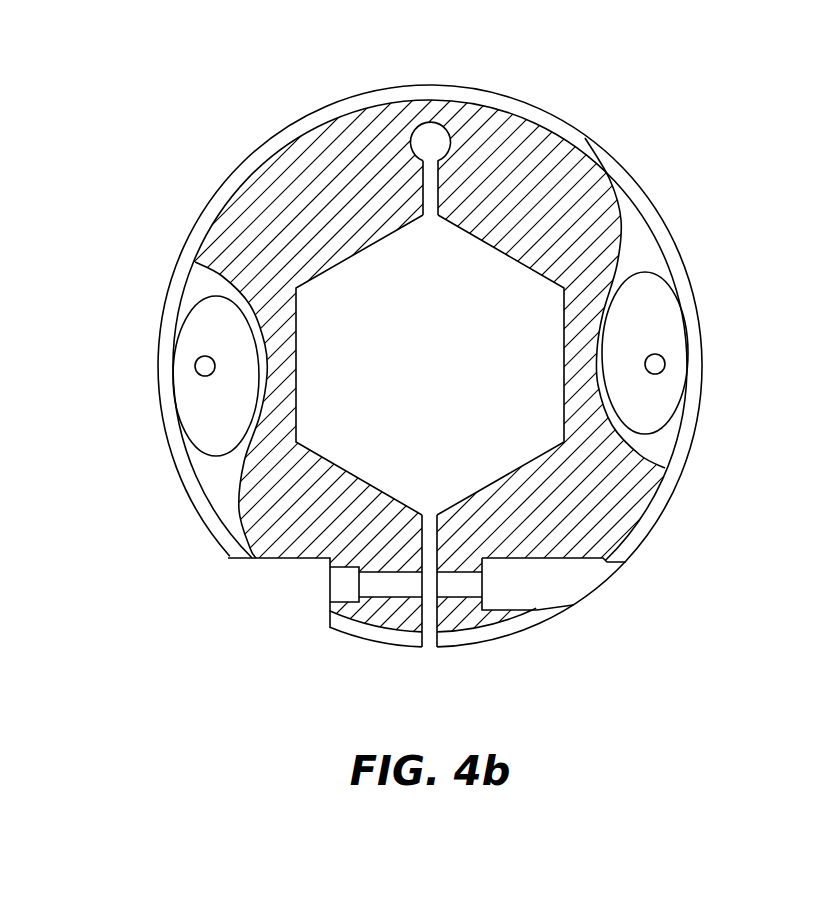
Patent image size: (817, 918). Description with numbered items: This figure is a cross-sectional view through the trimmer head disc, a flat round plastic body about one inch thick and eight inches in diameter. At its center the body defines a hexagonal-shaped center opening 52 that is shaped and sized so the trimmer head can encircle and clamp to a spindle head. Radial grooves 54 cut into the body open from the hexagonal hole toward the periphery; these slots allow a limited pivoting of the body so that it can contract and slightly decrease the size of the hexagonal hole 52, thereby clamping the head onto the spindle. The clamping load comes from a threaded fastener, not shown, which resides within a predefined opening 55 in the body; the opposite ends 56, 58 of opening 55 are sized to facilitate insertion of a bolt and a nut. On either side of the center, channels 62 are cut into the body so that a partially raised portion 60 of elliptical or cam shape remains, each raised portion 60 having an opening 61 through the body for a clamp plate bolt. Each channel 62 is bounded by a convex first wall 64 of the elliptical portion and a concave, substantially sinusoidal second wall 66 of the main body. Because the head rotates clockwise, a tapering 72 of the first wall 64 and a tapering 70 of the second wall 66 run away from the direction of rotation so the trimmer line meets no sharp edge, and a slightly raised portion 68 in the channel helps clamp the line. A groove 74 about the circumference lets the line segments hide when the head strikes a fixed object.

The center opening 52 is at (414, 378).
The radial grooves 54 is at (430, 199).
The opening 55 is at (392, 583).
The end of opening 56 is at (284, 593).
The end of opening 58 is at (511, 593).
The partially raised portion 60 is at (650, 318).
The opening 61 is at (658, 364).
The channel 62 is at (652, 441).
The first wall 64 is at (655, 270).
The second wall 66 is at (650, 463).
The raised portion 68 is at (610, 310).
The tapering of second wall 70 is at (620, 203).
The tapering of first wall 72 is at (673, 427).
The groove 74 is at (568, 140).